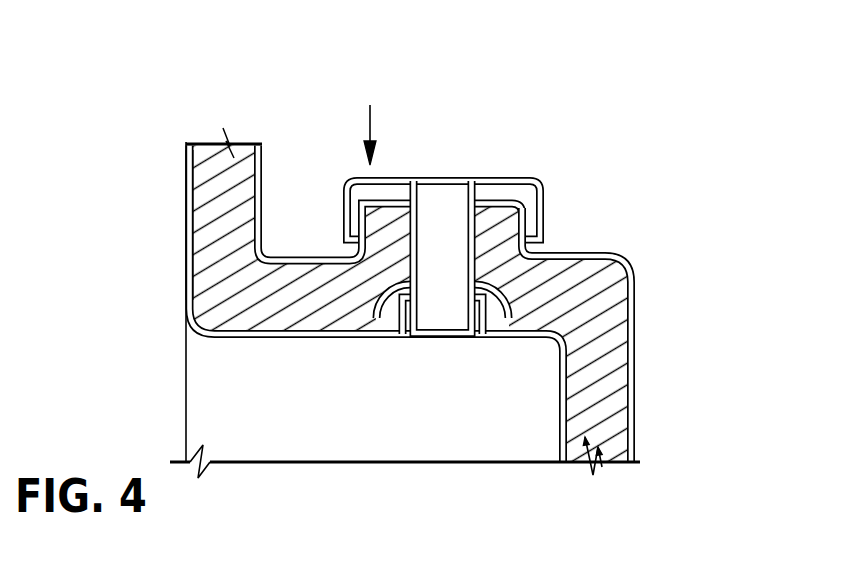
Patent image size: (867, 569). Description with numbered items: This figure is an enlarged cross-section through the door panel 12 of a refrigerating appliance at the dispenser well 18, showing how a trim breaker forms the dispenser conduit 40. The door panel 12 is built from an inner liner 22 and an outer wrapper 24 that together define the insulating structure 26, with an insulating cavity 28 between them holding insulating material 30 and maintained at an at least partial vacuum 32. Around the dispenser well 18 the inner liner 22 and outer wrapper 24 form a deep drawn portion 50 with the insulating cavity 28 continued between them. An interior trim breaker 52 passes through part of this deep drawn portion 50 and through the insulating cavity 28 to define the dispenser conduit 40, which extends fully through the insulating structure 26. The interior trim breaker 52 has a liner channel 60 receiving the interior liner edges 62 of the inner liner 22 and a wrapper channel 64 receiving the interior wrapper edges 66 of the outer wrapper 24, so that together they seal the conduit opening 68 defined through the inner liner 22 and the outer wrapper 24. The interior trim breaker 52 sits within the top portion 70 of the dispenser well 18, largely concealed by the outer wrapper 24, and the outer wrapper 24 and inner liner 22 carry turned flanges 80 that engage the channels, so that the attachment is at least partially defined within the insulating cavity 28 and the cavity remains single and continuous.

The door panel 12 is at (195, 214).
The dispenser well 18 is at (232, 309).
The inner liner 22 is at (638, 365).
The outer wrapper 24 is at (186, 276).
The insulating structure 26 is at (655, 395).
The insulating cavity 28 is at (190, 154).
The insulating material 30 is at (220, 190).
The at least partial vacuum 32 is at (586, 470).
The dispenser conduit 40 is at (505, 249).
The deep drawn portion 50 is at (634, 294).
The interior trim breaker 52 is at (401, 176).
The liner channel 60 is at (517, 197).
The interior liner edges 62 is at (540, 213).
The wrapper channel 64 is at (390, 302).
The interior wrapper edges 66 is at (493, 336).
The conduit opening 68 is at (451, 162).
The top portion 70 is at (377, 336).
The turned flange 80 is at (357, 204).